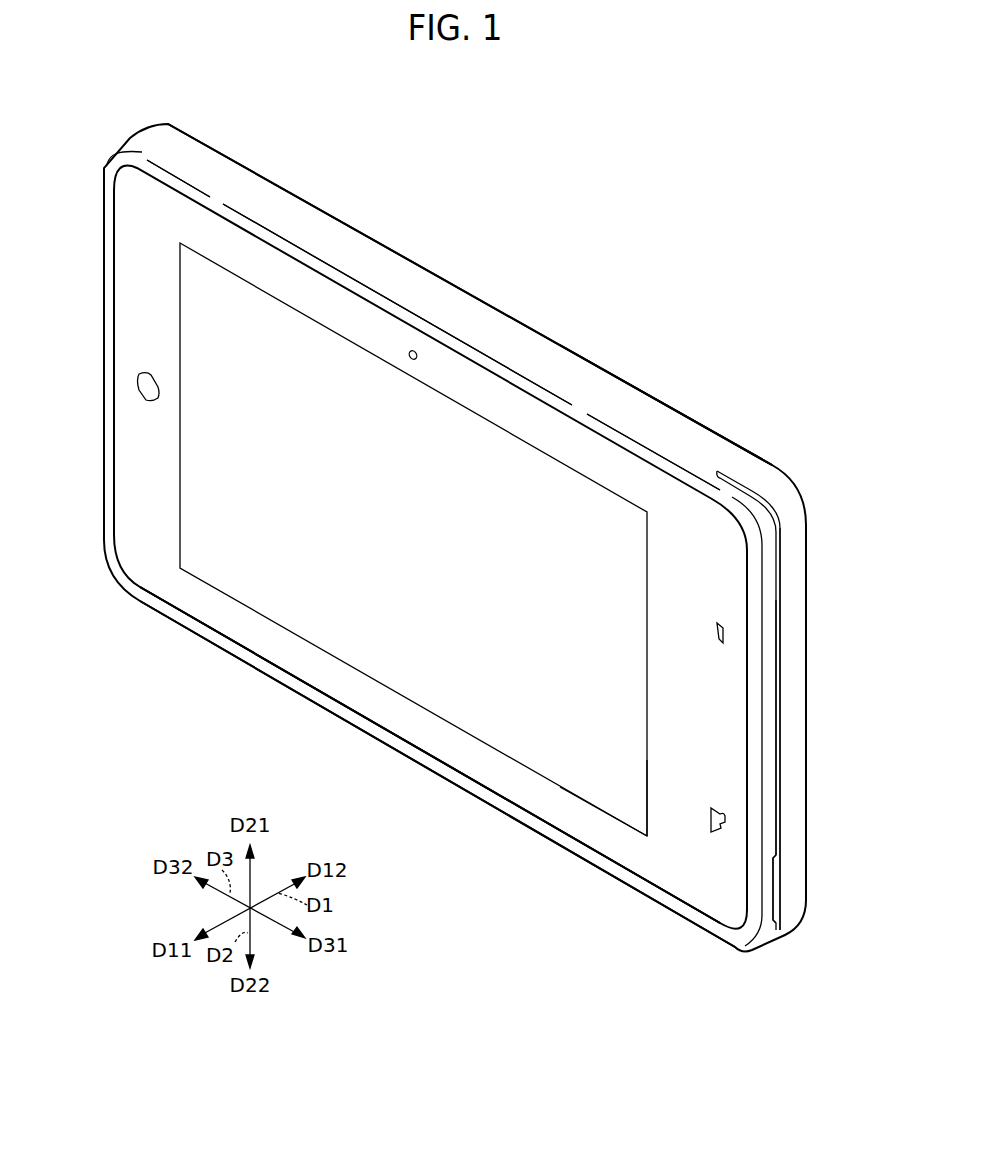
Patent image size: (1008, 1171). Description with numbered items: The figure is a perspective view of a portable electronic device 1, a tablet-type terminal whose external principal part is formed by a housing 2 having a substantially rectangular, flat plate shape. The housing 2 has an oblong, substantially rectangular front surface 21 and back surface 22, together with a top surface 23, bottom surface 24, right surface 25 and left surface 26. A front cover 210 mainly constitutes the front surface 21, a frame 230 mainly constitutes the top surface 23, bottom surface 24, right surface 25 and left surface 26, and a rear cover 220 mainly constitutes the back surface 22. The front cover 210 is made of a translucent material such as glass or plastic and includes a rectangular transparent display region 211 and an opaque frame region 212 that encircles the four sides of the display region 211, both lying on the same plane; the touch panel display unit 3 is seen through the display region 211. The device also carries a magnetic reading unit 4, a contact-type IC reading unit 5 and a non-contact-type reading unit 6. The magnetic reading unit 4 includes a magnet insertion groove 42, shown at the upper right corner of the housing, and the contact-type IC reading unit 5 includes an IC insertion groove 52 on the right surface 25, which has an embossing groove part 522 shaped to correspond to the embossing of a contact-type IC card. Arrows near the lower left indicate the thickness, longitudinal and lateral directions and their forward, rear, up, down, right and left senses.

The portable electronic device 1 is at (677, 158).
The housing 2 is at (553, 338).
The touch panel display unit 3 is at (470, 668).
The magnetic reading unit 4 is at (709, 607).
The contact-type IC reading unit 5 is at (706, 838).
The non-contact-type reading unit 6 is at (143, 363).
The front surface 21 is at (243, 632).
The front cover 210 is at (430, 755).
The back surface 22 is at (425, 272).
The top surface 23 is at (350, 243).
The frame 230 is at (433, 325).
The bottom surface 24 is at (373, 739).
The right surface 25 is at (790, 569).
The left surface 26 is at (104, 482).
The magnet insertion groove 42 is at (770, 500).
The IC insertion groove 52 is at (785, 817).
The embossing groove part 522 is at (780, 885).
The display region 211 is at (605, 764).
The frame region 212 is at (672, 802).
The rear cover 220 is at (615, 377).